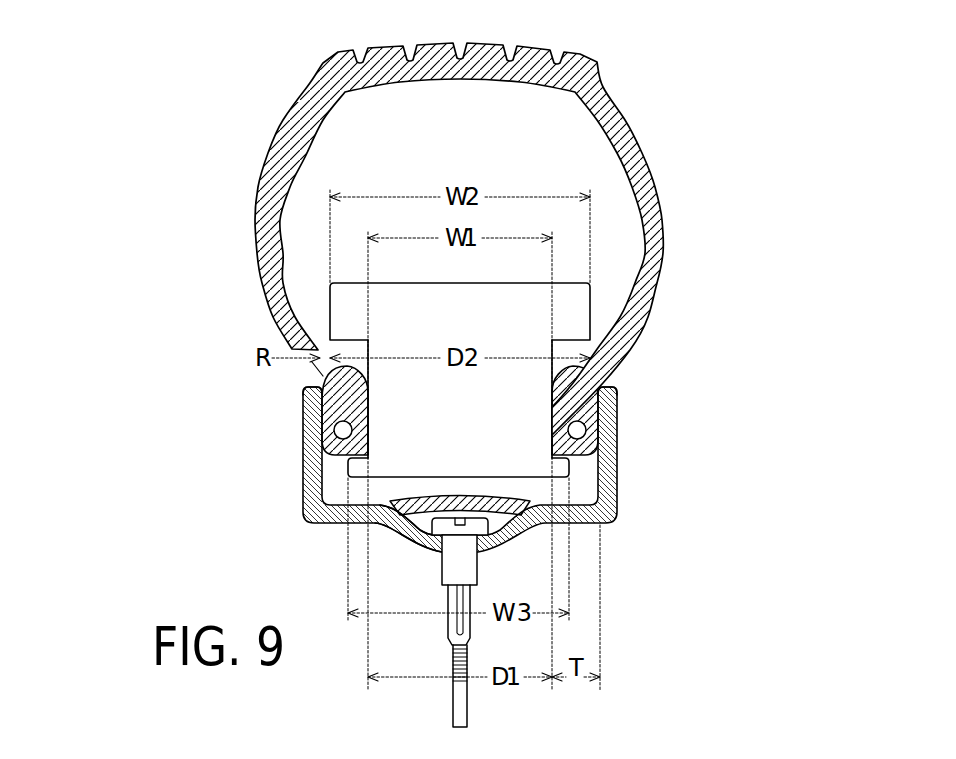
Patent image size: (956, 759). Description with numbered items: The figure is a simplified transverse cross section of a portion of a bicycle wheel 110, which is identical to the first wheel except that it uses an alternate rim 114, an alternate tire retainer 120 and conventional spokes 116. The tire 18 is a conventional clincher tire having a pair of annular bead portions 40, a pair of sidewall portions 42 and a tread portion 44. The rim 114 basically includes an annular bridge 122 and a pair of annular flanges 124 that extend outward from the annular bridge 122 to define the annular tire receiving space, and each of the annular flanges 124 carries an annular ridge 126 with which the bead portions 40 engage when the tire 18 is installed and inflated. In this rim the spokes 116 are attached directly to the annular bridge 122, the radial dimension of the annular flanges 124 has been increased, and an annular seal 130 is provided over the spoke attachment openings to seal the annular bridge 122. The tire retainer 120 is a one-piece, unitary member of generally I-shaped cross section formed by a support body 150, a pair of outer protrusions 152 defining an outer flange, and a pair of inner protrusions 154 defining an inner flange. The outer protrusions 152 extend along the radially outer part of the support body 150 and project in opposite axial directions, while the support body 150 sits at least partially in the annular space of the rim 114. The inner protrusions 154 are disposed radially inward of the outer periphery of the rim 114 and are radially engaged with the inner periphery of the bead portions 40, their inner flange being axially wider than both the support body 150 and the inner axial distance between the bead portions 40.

The tire 18 is at (459, 230).
The bead portions 40 is at (322, 427).
The sidewall portions 42 is at (257, 252).
The tread portion 44 is at (486, 44).
The bicycle wheel 110 is at (693, 94).
The rim 114 is at (465, 472).
The spokes 116 is at (450, 704).
The tire retainer 120 is at (600, 304).
The annular bridge 122 is at (403, 542).
The annular flanges 124 is at (322, 452).
The annular ridge 126 is at (303, 386).
The annular seal 130 is at (515, 540).
The support body 150 is at (476, 416).
The outer protrusions 152 is at (330, 315).
The inner protrusions 154 is at (350, 468).